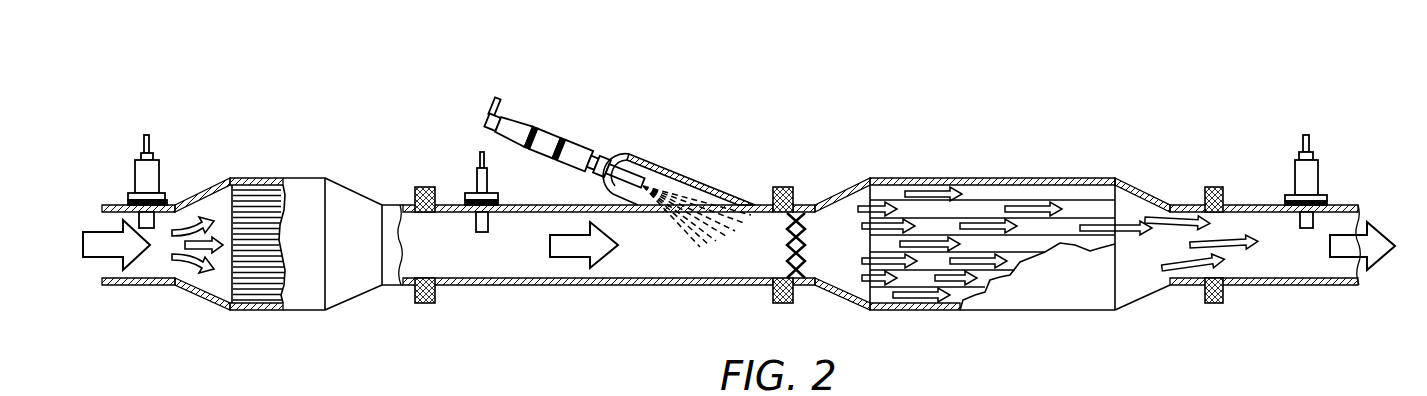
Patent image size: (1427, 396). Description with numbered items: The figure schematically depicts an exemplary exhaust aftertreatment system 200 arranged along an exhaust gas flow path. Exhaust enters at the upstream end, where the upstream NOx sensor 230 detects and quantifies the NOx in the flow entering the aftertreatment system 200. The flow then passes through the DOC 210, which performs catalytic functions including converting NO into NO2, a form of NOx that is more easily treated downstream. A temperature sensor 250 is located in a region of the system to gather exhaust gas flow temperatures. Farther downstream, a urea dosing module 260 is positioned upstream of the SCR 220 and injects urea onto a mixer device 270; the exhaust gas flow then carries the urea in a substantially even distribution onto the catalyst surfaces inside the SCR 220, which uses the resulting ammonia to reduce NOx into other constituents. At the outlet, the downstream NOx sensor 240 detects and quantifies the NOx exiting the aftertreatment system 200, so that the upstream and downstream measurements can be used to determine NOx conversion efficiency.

The aftertreatment system 200 is at (201, 90).
The DOC 210 is at (300, 192).
The SCR 220 is at (982, 212).
The upstream NOx sensor 230 is at (138, 174).
The downstream NOx sensor 240 is at (1310, 180).
The temperature sensor 250 is at (480, 178).
The urea dosing module 260 is at (570, 153).
The mixer device 270 is at (803, 235).